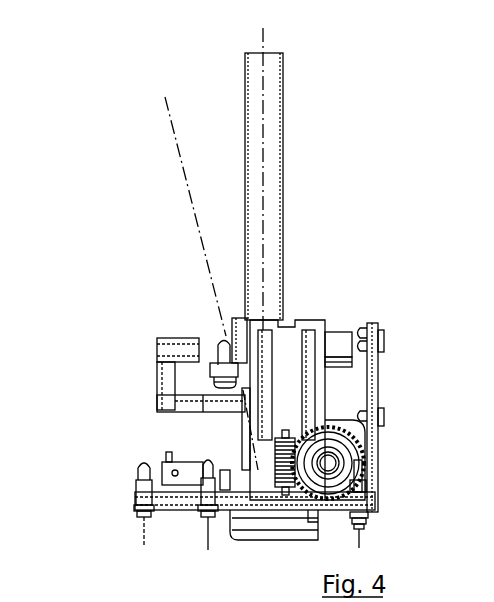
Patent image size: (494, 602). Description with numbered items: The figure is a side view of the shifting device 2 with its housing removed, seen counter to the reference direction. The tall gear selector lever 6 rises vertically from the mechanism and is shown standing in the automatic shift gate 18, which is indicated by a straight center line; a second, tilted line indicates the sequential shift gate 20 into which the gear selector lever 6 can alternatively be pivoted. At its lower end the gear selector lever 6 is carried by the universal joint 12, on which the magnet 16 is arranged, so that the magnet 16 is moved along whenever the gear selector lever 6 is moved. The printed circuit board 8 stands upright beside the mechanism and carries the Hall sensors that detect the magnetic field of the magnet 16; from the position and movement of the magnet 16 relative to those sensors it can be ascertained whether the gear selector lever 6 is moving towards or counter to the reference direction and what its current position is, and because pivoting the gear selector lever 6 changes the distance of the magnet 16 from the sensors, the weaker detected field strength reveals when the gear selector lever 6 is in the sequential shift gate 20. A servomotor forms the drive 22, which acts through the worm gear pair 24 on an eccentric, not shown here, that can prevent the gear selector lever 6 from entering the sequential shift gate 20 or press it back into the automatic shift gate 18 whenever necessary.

The shifting device 2 is at (66, 150).
The gear selector lever 6 is at (268, 126).
The printed circuit board 8 is at (360, 341).
The universal joint 12 is at (245, 350).
The magnet 16 is at (328, 337).
The automatic shift gate 18 is at (263, 43).
The sequential shift gate 20 is at (163, 125).
The drive 22 is at (280, 373).
The worm gear pair 24 is at (268, 465).